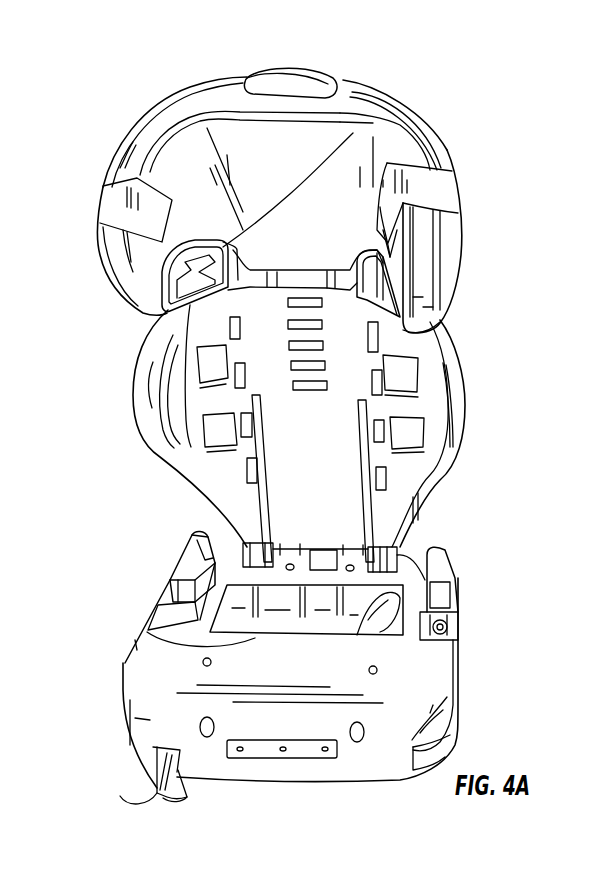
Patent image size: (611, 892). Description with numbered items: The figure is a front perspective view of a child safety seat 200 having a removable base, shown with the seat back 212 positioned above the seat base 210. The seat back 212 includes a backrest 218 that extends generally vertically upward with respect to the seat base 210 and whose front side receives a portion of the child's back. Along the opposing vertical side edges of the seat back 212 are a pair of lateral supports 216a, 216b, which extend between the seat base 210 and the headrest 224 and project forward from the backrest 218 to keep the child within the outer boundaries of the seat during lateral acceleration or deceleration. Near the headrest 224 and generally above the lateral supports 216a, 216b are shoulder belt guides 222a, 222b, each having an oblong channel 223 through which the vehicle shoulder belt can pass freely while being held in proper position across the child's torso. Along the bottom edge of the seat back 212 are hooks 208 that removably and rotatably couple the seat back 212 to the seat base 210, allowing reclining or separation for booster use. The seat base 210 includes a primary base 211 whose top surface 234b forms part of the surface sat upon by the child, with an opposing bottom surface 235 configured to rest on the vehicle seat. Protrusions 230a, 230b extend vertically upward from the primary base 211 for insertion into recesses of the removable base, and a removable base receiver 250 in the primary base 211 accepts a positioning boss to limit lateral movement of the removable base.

The child safety seat 200 is at (176, 85).
The channel 223 is at (350, 143).
The headrest 224 is at (353, 133).
The shoulder belt guide 222a is at (190, 249).
The shoulder belt guide 222b is at (387, 287).
The lateral support 216a is at (143, 376).
The lateral support 216b is at (450, 371).
The backrest 218 is at (325, 437).
The seat back 212 is at (126, 414).
The hooks 208 is at (250, 545).
The protrusion 230a is at (185, 557).
The protrusion 230b is at (433, 565).
The removable base receiver 250 is at (150, 645).
The top surface 234b is at (170, 673).
The primary base 211 is at (443, 670).
The bottom surface 235 is at (257, 780).
The seat base 210 is at (320, 787).